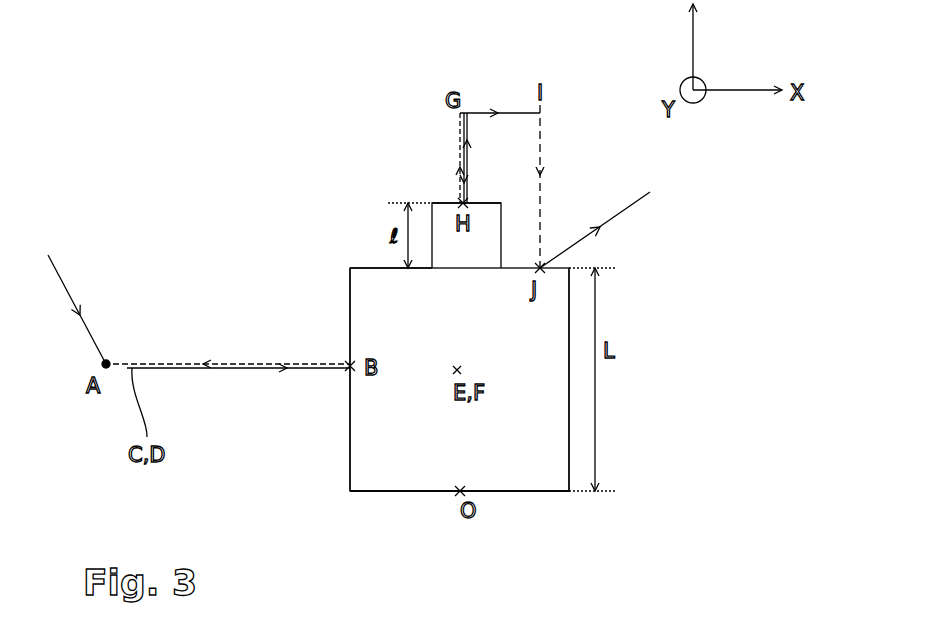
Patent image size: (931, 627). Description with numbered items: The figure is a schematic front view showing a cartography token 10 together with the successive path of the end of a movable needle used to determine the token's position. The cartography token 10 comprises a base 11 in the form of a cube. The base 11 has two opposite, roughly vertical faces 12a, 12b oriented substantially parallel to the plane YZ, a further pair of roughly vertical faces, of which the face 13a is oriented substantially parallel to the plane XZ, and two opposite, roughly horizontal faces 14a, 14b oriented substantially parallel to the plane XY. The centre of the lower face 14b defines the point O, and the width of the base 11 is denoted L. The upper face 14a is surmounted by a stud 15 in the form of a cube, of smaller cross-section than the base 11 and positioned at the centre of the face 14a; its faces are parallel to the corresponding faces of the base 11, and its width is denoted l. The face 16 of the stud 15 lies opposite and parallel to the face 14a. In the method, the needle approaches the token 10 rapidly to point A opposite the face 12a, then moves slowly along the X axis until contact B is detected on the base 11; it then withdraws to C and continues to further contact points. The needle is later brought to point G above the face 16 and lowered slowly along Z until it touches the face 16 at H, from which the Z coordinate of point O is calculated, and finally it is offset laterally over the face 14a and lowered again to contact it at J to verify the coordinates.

The cartography token 10 is at (585, 518).
The base 11 is at (525, 467).
The face 12a is at (350, 433).
The face 12b is at (569, 430).
The face 13a is at (415, 465).
The face 14a is at (365, 268).
The face 14b is at (385, 491).
The stud 15 is at (477, 232).
The face 16 is at (485, 203).